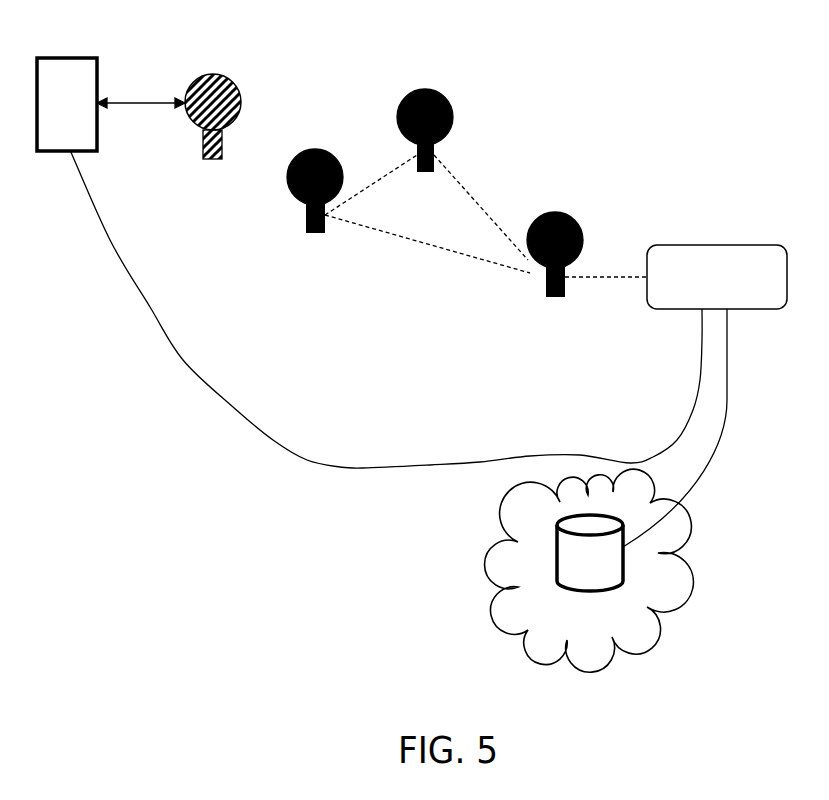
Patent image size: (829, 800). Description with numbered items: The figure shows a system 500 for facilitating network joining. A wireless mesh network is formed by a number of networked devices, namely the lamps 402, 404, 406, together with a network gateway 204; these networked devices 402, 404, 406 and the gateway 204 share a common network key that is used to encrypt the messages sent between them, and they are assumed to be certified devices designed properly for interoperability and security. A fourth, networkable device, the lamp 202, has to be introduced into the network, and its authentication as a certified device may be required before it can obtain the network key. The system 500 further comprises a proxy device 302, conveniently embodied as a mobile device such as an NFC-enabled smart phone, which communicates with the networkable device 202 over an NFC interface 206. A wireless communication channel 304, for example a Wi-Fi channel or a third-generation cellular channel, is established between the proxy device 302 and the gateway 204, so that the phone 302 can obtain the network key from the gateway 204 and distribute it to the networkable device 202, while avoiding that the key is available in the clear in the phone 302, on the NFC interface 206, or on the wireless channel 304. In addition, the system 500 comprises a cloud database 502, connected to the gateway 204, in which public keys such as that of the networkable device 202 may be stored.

The system 500 is at (685, 106).
The proxy device 302 is at (48, 58).
The NFC interface 206 is at (157, 105).
The networkable device 202 is at (237, 91).
The lamp 402 is at (452, 113).
The lamp 404 is at (302, 202).
The lamp 406 is at (582, 232).
The network gateway 204 is at (720, 245).
The wireless communication channel 304 is at (183, 360).
The cloud database 502 is at (583, 592).